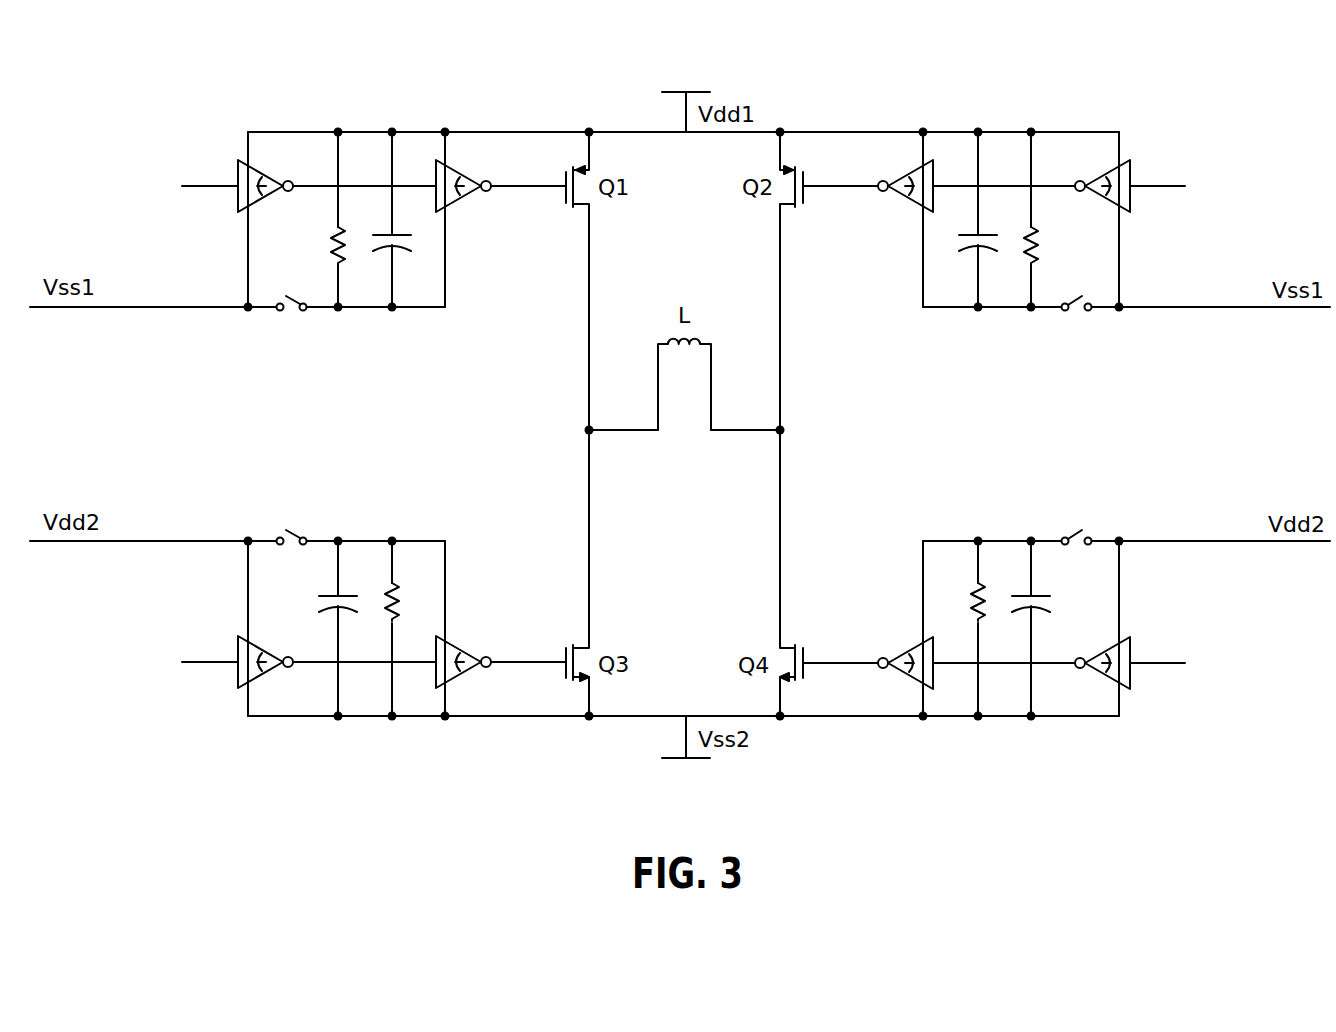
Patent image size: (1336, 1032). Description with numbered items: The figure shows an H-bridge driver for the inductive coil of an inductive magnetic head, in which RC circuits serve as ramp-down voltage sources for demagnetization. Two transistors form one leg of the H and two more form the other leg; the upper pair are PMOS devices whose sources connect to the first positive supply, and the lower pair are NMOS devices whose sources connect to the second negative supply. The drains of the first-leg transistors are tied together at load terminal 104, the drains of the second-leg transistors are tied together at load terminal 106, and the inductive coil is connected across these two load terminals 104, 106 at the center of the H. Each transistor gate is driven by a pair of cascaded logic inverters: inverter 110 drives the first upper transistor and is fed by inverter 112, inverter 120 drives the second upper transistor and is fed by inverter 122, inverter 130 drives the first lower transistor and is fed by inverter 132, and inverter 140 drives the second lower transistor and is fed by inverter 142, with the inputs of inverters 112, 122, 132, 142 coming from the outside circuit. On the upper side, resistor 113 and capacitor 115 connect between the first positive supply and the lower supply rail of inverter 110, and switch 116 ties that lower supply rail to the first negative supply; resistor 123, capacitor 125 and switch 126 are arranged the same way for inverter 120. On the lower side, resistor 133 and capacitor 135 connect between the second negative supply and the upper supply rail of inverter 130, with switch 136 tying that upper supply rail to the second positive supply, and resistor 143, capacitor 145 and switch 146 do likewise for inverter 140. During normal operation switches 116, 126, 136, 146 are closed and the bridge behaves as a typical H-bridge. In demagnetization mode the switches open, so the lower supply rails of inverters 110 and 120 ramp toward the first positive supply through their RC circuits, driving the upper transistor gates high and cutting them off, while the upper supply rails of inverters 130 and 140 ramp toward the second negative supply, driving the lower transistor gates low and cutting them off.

The load terminal 104 is at (589, 430).
The load terminal 106 is at (782, 430).
The inverter 110 is at (462, 205).
The inverter 112 is at (265, 203).
The resistor 113 is at (348, 270).
The capacitor 115 is at (421, 245).
The switch 116 is at (288, 315).
The inverter 120 is at (910, 201).
The inverter 122 is at (1102, 200).
The resistor 123 is at (1020, 270).
The capacitor 125 is at (953, 246).
The switch 126 is at (1078, 316).
The inverter 130 is at (457, 648).
The inverter 132 is at (262, 650).
The resistor 133 is at (410, 602).
The capacitor 135 is at (351, 586).
The switch 136 is at (282, 521).
The inverter 140 is at (912, 649).
The inverter 142 is at (1103, 652).
The resistor 143 is at (960, 602).
The capacitor 145 is at (1017, 586).
The switch 146 is at (1084, 520).